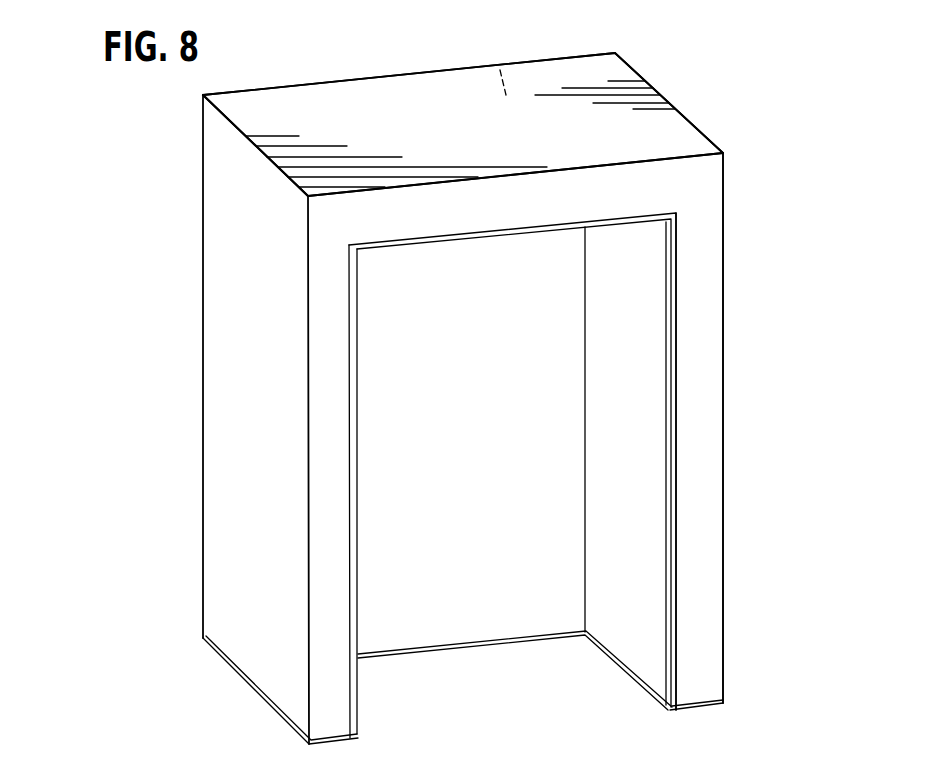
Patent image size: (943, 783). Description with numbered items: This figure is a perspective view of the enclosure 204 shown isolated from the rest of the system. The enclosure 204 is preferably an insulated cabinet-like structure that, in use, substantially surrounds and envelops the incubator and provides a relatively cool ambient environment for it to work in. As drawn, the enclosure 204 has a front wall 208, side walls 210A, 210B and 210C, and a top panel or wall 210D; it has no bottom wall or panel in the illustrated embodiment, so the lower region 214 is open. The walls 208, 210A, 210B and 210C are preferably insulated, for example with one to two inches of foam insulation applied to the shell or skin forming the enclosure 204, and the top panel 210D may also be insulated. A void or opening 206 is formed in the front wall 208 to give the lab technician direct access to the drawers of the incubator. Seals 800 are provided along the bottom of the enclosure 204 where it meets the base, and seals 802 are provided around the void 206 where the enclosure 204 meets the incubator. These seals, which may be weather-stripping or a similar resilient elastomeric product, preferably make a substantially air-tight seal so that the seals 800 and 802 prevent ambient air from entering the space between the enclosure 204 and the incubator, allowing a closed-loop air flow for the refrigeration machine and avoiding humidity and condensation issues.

The enclosure 204 is at (740, 345).
The void 206 is at (487, 411).
The front wall 208 is at (702, 466).
The side wall 210A is at (700, 252).
The side wall 210B is at (498, 63).
The side wall 210C is at (225, 193).
The top panel 210D is at (397, 105).
The floor 214 is at (637, 620).
The seals 800 is at (332, 743).
The seals 802 is at (415, 247).